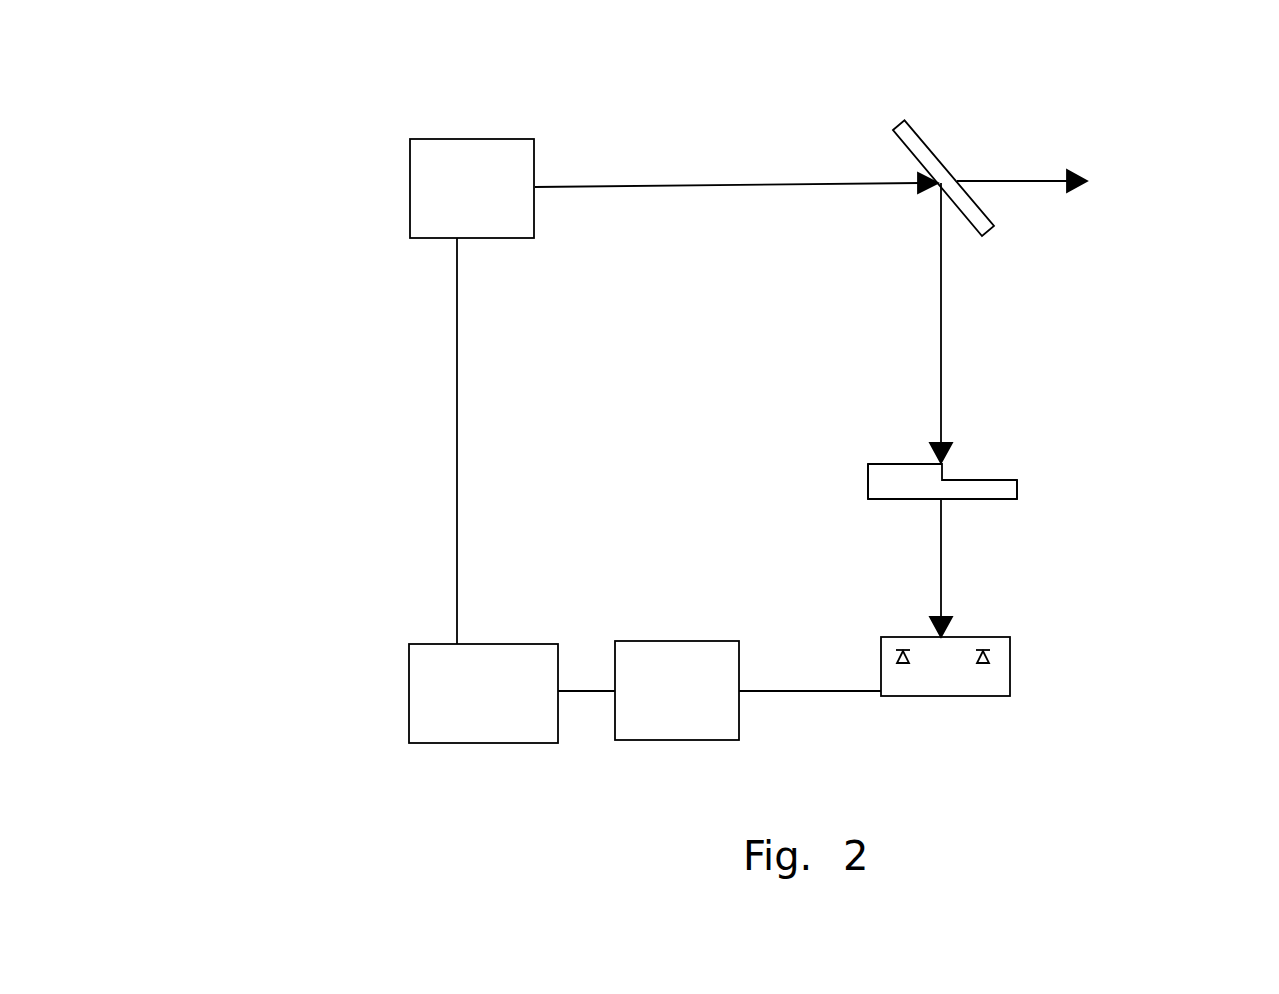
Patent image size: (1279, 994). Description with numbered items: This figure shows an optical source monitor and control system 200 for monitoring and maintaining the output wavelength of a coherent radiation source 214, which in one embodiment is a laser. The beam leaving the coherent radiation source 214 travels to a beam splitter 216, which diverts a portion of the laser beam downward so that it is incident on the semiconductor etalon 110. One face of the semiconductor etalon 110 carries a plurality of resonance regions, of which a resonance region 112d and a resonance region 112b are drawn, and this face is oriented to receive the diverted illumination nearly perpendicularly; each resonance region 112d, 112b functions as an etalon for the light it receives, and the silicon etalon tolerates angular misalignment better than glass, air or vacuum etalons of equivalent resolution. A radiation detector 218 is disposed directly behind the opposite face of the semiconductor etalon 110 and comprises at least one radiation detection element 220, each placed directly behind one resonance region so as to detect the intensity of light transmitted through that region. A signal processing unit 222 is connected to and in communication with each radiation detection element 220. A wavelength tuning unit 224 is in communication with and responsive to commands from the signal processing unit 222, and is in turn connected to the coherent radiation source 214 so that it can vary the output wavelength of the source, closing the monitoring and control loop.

The optical source monitor and control system 200 is at (385, 464).
The coherent radiation source 214 is at (455, 139).
The beam splitter 216 is at (928, 147).
The semiconductor etalon 110 is at (994, 421).
The resonance region 112d is at (897, 463).
The resonance region 112b is at (978, 480).
The radiation detector 218 is at (1028, 645).
The radiation detection element 220 is at (911, 657).
The signal processing unit 222 is at (667, 640).
The wavelength tuning unit 224 is at (409, 703).